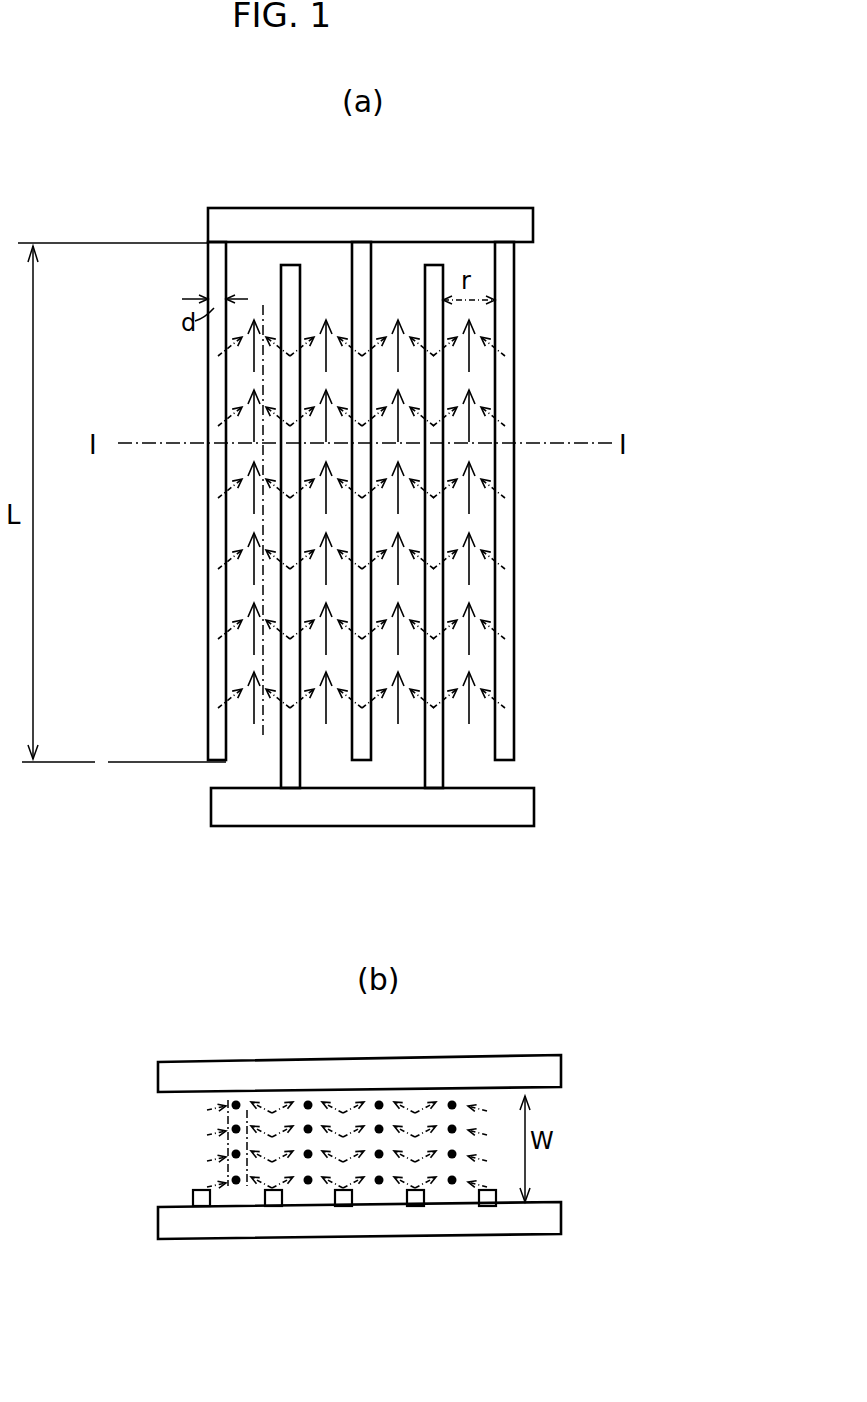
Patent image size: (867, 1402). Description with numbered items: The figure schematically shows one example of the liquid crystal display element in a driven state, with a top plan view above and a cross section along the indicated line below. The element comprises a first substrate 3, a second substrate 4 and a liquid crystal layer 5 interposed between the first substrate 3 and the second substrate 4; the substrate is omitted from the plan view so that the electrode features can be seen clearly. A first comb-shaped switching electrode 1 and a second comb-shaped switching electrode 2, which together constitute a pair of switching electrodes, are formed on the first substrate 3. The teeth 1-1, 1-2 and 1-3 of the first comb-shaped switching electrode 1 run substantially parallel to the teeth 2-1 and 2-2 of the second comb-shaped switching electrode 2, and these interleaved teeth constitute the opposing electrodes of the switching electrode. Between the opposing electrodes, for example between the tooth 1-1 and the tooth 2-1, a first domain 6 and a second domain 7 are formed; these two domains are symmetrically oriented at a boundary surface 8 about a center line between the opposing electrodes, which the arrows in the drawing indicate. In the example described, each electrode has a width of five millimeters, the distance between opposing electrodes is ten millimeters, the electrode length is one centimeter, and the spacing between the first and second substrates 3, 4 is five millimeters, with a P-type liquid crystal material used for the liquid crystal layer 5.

The first comb-shaped switching electrode 1 is at (208, 209).
The tooth of the first comb-shaped switching electrode 1-1 is at (208, 270).
The tooth of the first comb-shaped switching electrode 1-2 is at (373, 278).
The tooth of the first comb-shaped switching electrode 1-3 is at (515, 275).
The second comb-shaped switching electrode 2 is at (490, 817).
The tooth of the second comb-shaped switching electrode 2-1 is at (301, 763).
The tooth of the second comb-shaped switching electrode 2-2 is at (475, 772).
The first substrate 3 is at (550, 1222).
The second substrate 4 is at (273, 1067).
The liquid crystal layer 5 is at (330, 265).
The first domain 6 is at (236, 727).
The second domain 7 is at (272, 728).
The boundary surface 8 is at (257, 728).